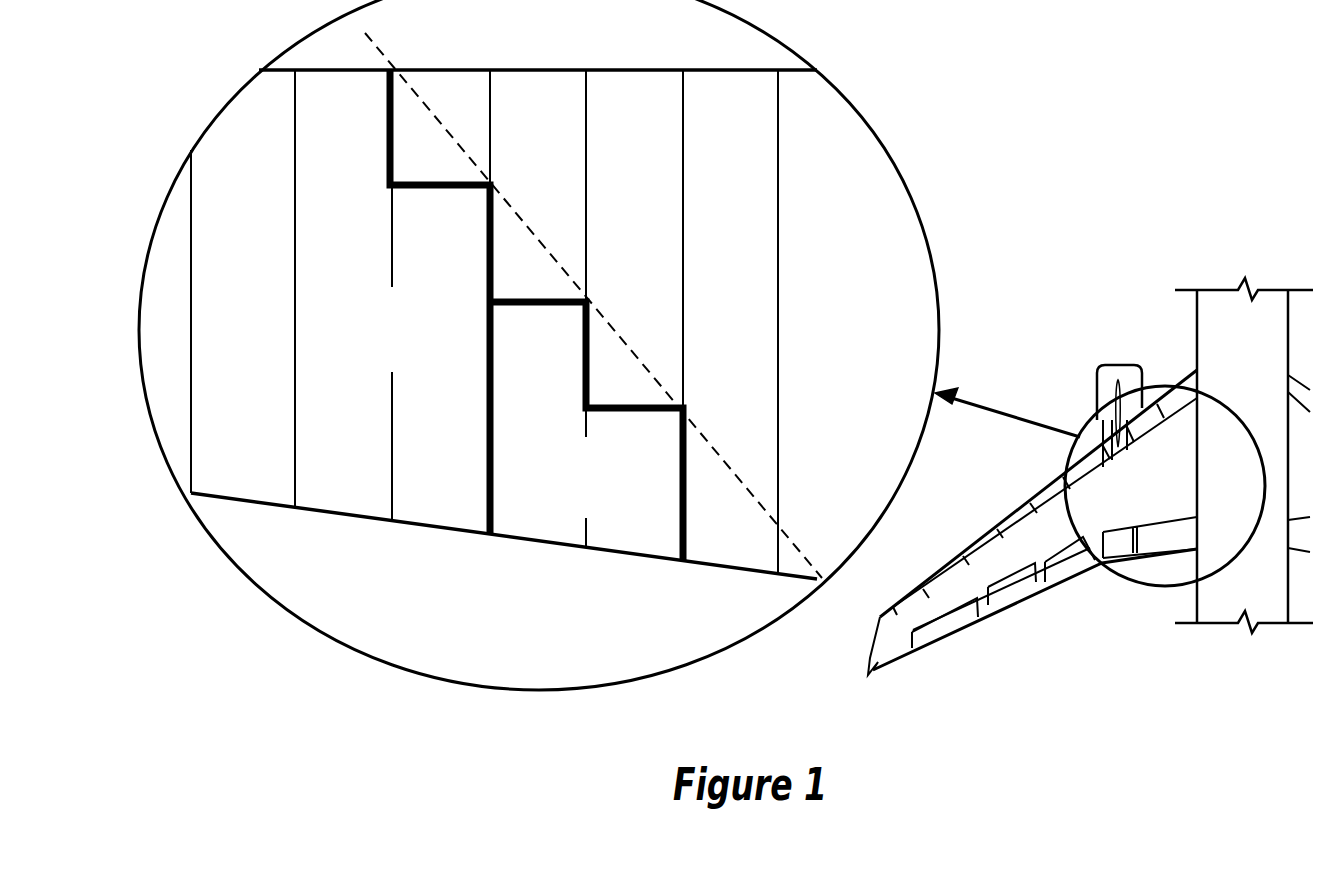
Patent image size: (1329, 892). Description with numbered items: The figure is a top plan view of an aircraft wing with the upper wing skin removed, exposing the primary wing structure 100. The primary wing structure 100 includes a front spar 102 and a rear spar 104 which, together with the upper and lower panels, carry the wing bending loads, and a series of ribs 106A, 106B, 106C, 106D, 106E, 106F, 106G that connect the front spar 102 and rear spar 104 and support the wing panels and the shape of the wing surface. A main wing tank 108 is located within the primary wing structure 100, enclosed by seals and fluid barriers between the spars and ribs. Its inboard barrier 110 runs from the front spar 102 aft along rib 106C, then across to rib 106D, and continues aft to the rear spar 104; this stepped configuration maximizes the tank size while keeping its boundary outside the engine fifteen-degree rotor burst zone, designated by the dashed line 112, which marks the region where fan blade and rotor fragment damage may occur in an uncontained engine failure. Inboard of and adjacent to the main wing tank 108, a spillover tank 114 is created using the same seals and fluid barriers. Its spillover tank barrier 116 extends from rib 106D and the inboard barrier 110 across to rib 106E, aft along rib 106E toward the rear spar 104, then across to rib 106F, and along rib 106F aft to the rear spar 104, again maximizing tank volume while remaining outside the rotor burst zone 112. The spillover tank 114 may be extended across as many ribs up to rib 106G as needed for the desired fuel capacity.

The primary wing structure 100 is at (896, 66).
The front spar 102 is at (623, 70).
The rear spar 104 is at (436, 530).
The rib 106A is at (227, 418).
The rib 106B is at (331, 430).
The rib 106C is at (428, 443).
The rib 106D is at (526, 108).
The rib 106E is at (622, 108).
The rib 106F is at (719, 108).
The rib 106G is at (778, 220).
The main wing tank 108 is at (375, 367).
The inboard barrier 110 is at (488, 262).
The engine 15-degree rotor burst zone 112 is at (613, 324).
The spillover tank 114 is at (571, 514).
The spillover tank barrier 116 is at (584, 372).